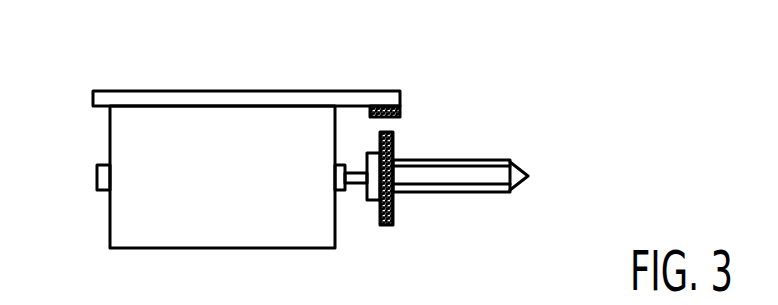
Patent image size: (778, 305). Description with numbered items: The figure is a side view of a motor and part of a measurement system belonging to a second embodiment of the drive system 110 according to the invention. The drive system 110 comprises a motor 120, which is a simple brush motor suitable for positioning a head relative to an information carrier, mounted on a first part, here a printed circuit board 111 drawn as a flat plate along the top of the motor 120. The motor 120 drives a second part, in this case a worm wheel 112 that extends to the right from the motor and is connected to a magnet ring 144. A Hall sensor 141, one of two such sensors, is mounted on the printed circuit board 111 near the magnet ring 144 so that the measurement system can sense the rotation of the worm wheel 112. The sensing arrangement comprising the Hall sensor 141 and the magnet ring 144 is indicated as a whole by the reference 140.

The drive system 110 is at (104, 77).
The printed circuit board 111 is at (354, 91).
The motor 120 is at (110, 219).
The fastening assembly 140 is at (434, 97).
The Hall sensor 141 is at (400, 113).
The magnet ring 144 is at (395, 147).
The worm wheel 112 is at (524, 165).